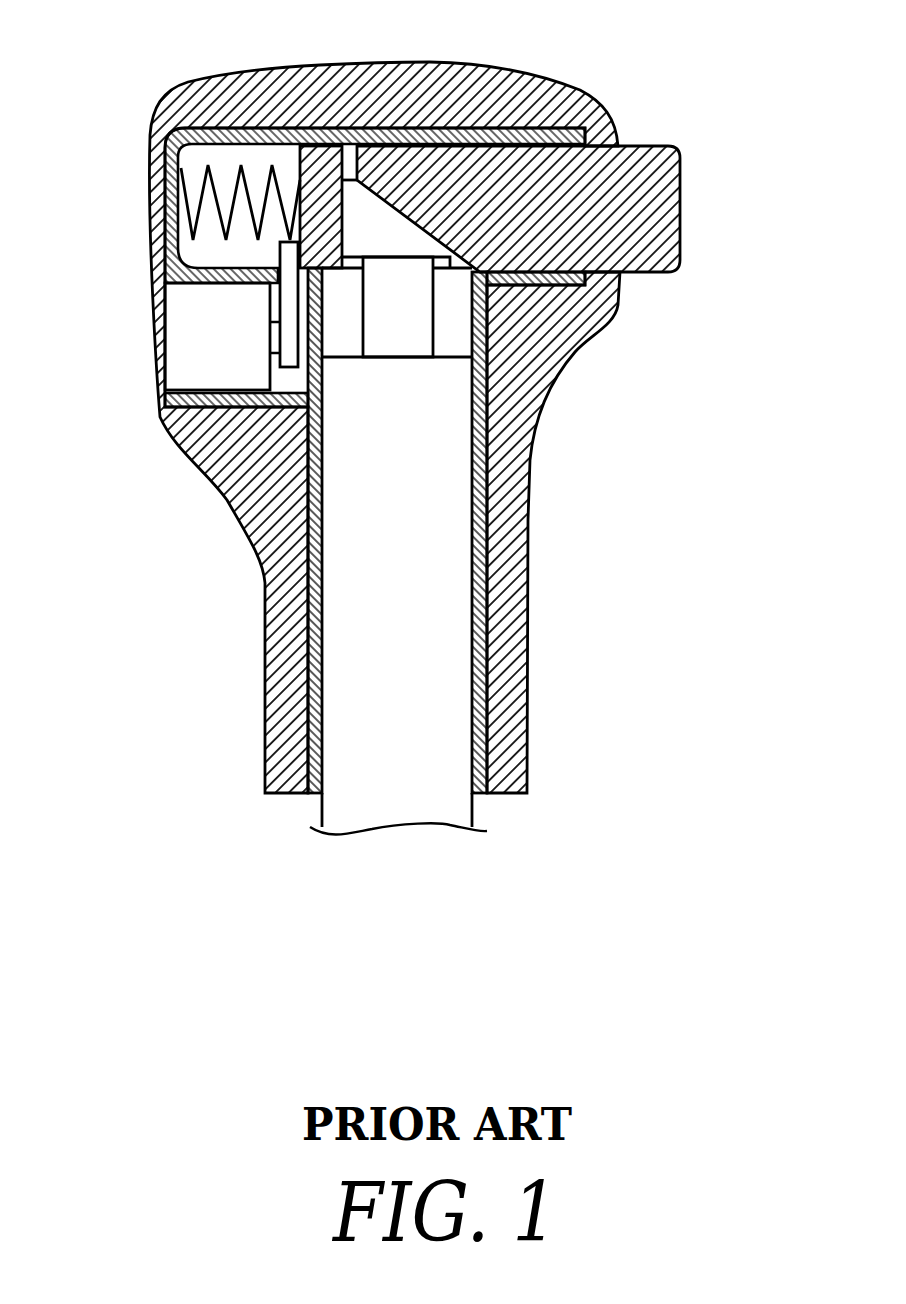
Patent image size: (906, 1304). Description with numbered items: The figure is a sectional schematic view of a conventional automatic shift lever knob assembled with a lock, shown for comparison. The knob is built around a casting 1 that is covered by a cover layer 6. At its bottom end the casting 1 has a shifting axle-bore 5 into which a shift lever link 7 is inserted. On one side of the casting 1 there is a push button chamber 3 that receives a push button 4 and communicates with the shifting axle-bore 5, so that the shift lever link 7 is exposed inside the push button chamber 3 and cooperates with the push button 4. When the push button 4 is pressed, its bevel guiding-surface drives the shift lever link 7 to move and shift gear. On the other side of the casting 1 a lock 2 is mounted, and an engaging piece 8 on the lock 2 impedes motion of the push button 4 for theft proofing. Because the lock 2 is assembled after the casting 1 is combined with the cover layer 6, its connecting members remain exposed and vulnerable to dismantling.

The casting 1 is at (475, 618).
The lock 2 is at (222, 340).
The push button chamber 3 is at (268, 128).
The push button 4 is at (620, 209).
The shifting axle-bore 5 is at (473, 535).
The cover layer 6 is at (510, 450).
The shift lever link 7 is at (403, 310).
The engaging piece 8 is at (287, 255).